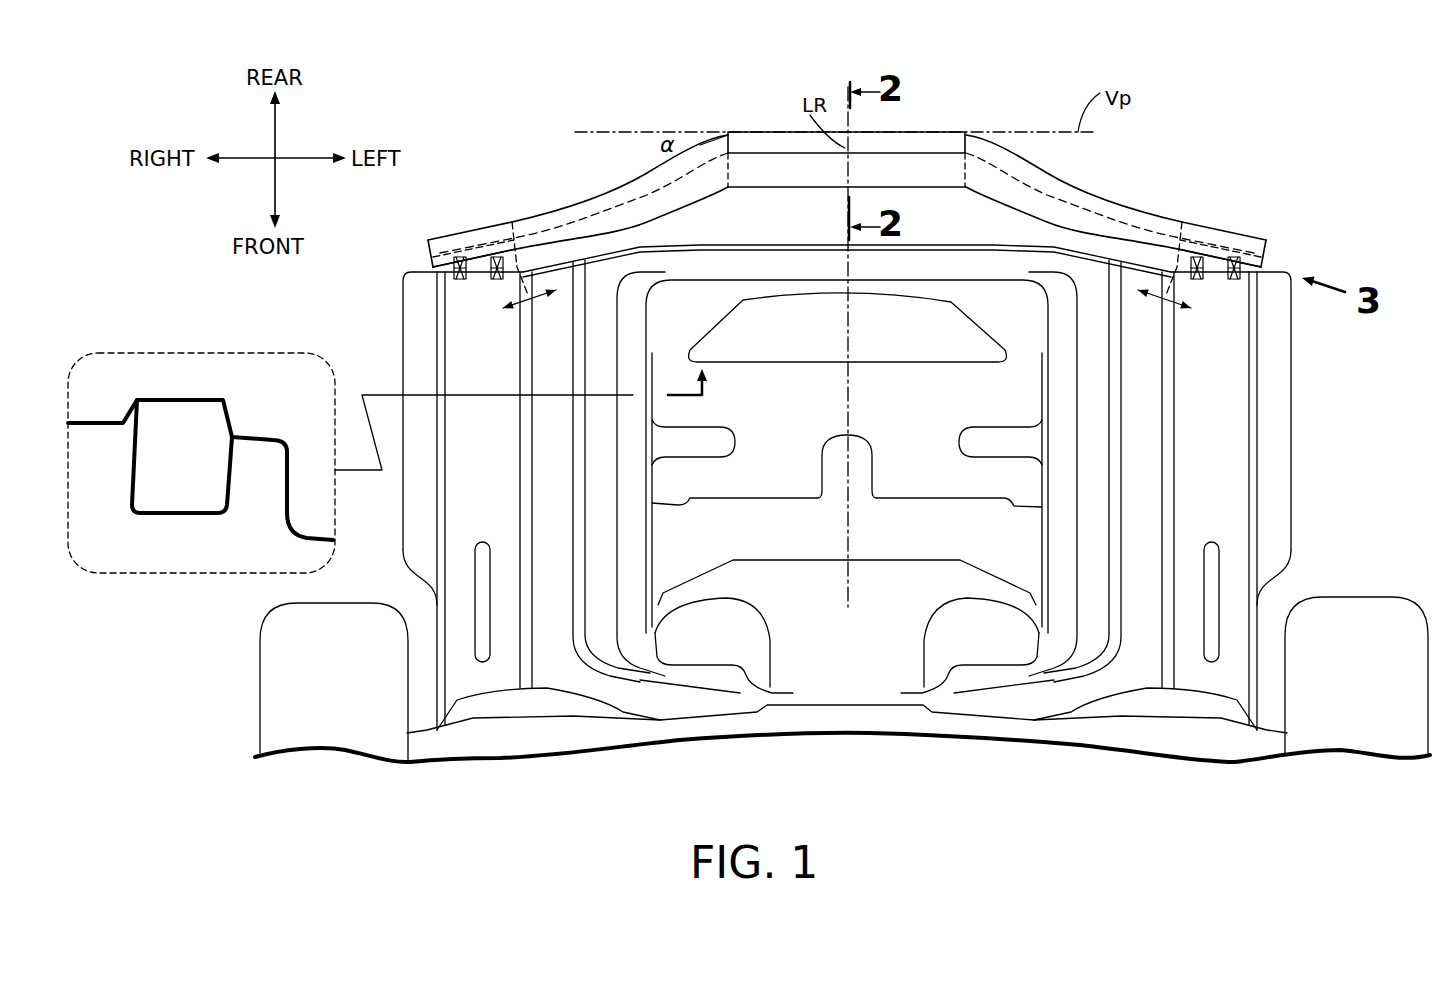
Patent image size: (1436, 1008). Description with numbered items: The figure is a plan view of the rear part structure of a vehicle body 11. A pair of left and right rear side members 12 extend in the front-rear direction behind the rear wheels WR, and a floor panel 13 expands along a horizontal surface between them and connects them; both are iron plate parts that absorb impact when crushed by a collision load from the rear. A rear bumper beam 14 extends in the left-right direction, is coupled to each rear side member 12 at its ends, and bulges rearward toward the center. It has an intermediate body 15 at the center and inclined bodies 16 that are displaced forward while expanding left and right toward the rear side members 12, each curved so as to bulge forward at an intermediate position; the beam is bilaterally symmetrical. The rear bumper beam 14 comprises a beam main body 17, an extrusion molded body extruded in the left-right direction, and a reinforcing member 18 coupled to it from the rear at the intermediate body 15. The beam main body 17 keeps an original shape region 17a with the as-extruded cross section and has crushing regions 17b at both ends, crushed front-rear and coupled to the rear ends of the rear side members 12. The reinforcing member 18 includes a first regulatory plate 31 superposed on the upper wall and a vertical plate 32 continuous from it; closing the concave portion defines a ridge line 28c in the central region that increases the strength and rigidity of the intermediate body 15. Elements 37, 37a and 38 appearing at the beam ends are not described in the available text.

The vehicle body 11 is at (1185, 178).
The rear side member 12 is at (470, 378).
The floor panel 13 is at (778, 265).
The rear bumper beam 14 is at (1102, 193).
The intermediate body 15 is at (912, 190).
The inclined body 16 is at (678, 208).
The beam main body 17 is at (777, 190).
The original shape region 17a is at (832, 308).
The crushing region 17b is at (849, 315).
The reinforcing member 18 is at (912, 133).
The ridge line 28c is at (600, 203).
The first regulatory plate 31 is at (771, 147).
The vertical plate 32 is at (752, 132).
The joint bracket 37 is at (487, 230).
The fastening bolts 37a is at (467, 245).
The end bracket 38 is at (447, 233).
The rear wheel WR is at (268, 668).